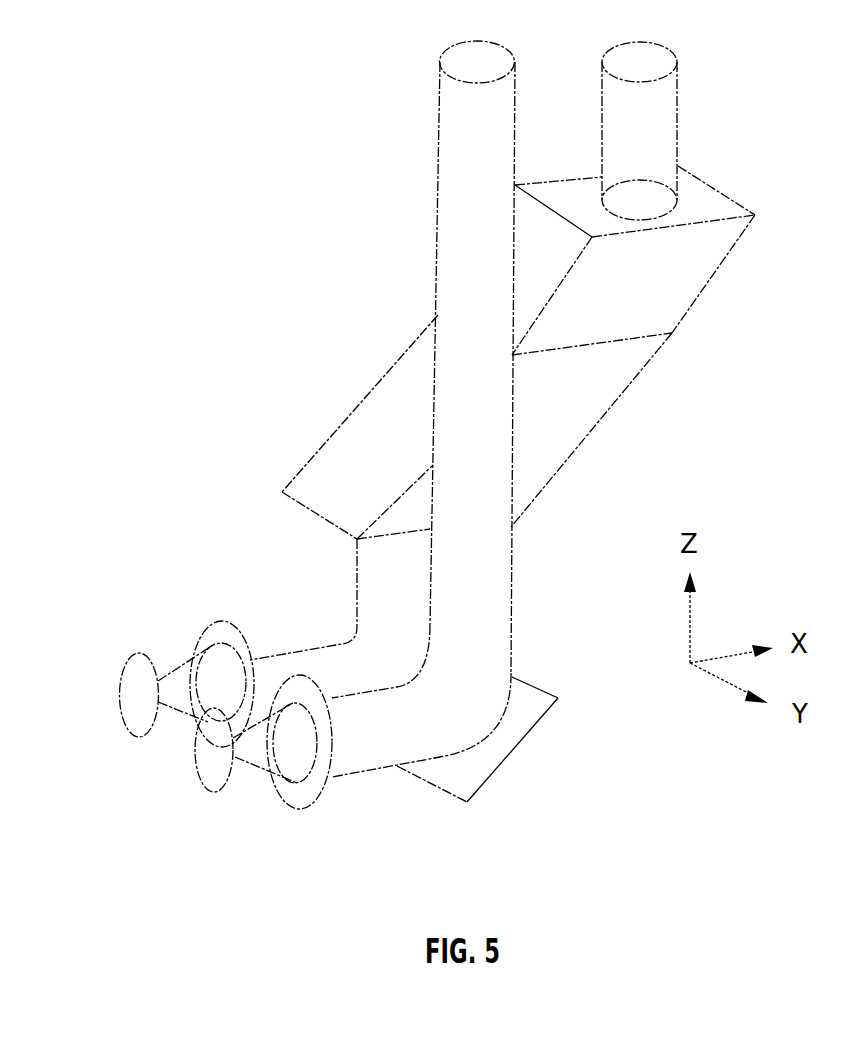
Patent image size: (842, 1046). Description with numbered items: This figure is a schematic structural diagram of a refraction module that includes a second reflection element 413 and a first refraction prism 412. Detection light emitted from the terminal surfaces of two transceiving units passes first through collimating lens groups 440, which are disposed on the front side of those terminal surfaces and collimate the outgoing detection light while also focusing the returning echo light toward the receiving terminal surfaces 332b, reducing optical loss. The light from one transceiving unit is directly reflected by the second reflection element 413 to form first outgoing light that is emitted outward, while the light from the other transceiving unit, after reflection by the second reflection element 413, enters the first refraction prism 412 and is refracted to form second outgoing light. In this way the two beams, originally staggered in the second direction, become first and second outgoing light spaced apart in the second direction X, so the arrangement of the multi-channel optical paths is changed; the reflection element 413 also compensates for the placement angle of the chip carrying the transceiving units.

The first refraction prism 412 is at (592, 402).
The second reflection element 413 is at (515, 732).
The collimating lens group 440 is at (222, 622).
The receiving terminal surface 332b is at (140, 655).